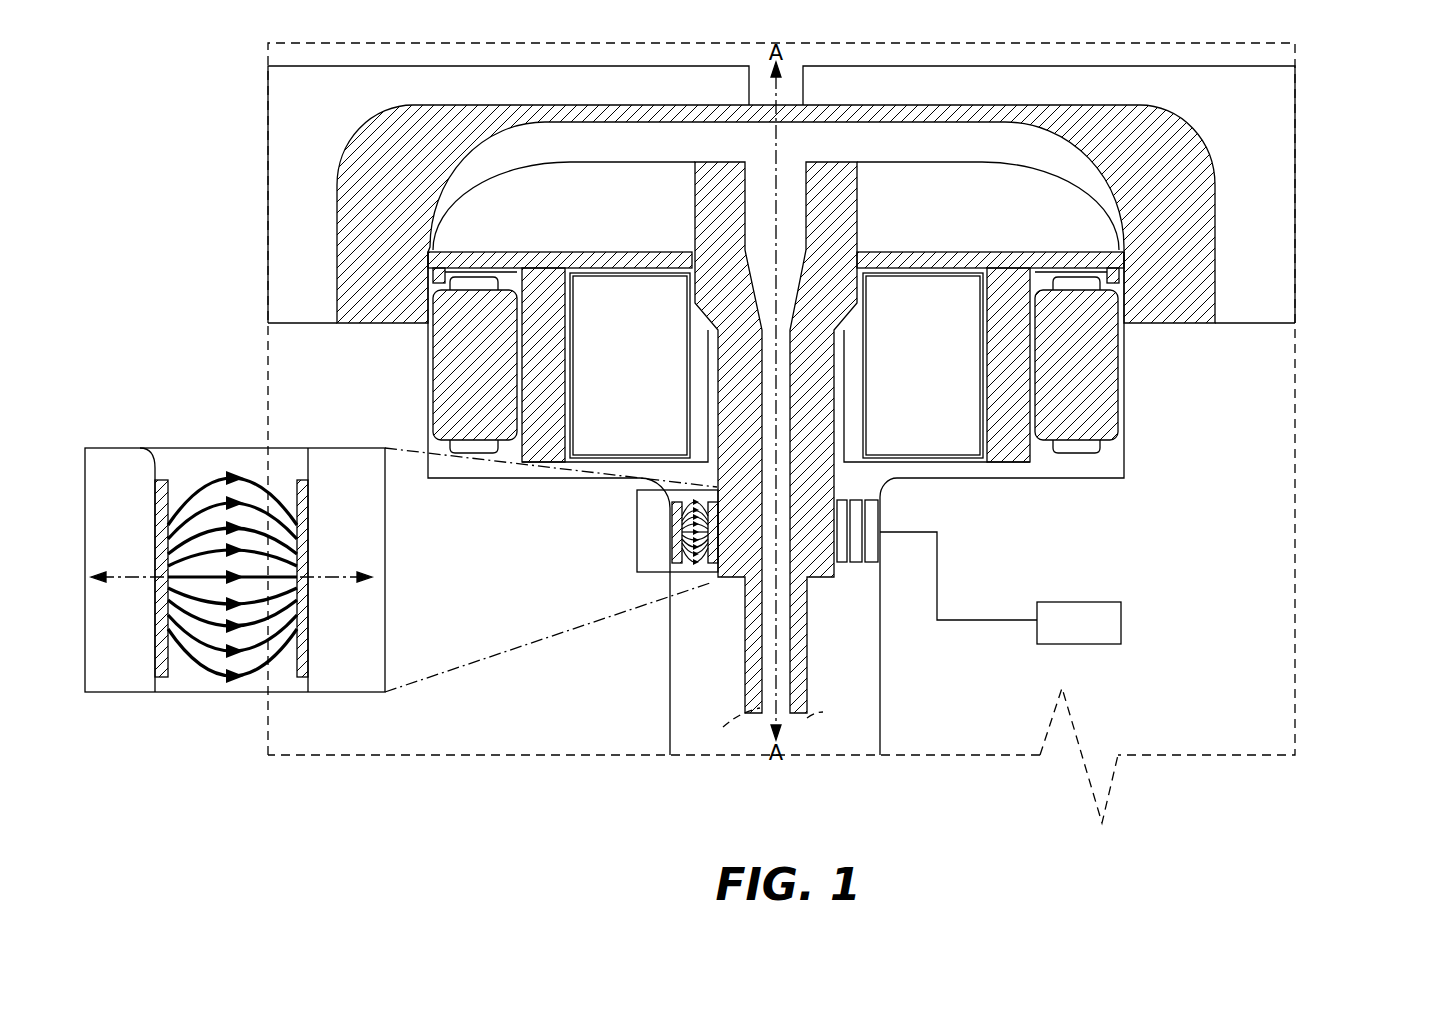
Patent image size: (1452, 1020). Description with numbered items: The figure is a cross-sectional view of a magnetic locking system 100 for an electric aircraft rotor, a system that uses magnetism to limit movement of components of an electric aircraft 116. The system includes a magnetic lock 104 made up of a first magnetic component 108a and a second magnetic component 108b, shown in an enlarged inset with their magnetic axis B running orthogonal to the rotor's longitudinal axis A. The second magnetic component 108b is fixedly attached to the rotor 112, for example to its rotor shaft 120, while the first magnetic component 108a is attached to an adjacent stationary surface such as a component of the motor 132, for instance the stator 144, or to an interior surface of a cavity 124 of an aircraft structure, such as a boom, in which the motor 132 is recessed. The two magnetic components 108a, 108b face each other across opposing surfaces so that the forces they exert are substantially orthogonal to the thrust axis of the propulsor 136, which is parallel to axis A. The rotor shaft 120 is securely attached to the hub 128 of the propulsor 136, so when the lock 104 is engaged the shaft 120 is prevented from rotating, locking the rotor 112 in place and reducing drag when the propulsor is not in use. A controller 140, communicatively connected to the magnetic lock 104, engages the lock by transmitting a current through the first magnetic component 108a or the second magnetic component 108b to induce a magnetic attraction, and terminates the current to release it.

The magnetic locking system 100 is at (1013, 438).
The magnetic lock 104 is at (248, 593).
The first magnetic component 108a is at (157, 643).
The second magnetic component 108b is at (308, 659).
The rotor 112 is at (884, 513).
The electric aircraft 116 is at (975, 673).
The rotor shaft 120 is at (835, 200).
The cavity 124 is at (870, 673).
The hub 128 is at (1147, 148).
The motor 132 is at (428, 377).
The propulsor 136 is at (1167, 112).
The controller 140 is at (1097, 628).
The stator 144 is at (1080, 382).